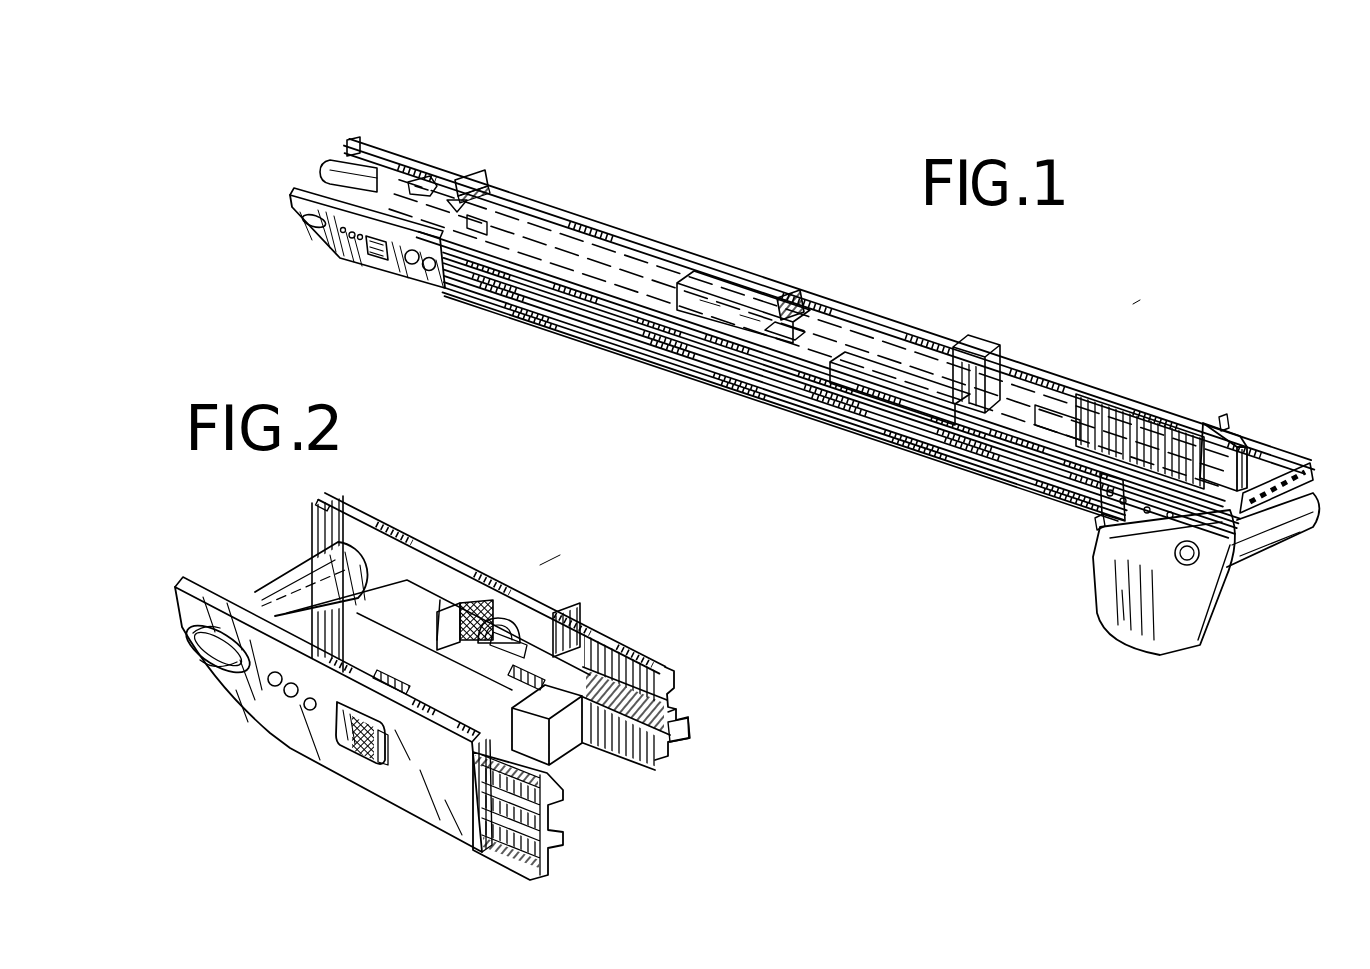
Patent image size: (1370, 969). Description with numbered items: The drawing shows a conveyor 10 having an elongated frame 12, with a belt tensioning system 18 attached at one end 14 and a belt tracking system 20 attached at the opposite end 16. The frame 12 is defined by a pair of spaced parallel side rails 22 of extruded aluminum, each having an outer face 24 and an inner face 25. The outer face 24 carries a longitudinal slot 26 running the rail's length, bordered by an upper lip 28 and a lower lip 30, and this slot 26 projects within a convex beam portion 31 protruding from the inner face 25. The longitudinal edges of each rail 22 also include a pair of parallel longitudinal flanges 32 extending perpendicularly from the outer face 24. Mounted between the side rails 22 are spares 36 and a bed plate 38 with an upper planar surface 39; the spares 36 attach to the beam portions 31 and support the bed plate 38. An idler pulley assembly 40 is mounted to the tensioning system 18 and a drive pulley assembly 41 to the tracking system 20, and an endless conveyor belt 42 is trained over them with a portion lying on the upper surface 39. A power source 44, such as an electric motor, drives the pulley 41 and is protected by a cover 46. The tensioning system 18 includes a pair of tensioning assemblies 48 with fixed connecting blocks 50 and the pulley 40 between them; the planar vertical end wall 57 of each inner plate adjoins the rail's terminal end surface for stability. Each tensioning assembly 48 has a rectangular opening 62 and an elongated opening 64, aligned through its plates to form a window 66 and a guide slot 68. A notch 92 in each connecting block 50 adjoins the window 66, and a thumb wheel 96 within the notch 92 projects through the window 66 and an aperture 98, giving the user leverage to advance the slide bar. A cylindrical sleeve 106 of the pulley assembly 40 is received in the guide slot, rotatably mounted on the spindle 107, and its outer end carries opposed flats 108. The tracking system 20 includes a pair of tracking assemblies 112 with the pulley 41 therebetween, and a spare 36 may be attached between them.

In FIG. 1, the conveyor 10 is at (1132, 304).
In FIG. 1, the elongated frame 12 is at (625, 230).
In FIG. 1, the end of the frame 14 is at (478, 178).
In FIG. 1, the end of the frame 16 is at (1105, 456).
In FIG. 1, the belt tensioning system 18 is at (352, 132).
In FIG. 2, the belt tensioning system 18 is at (550, 562).
In FIG. 1, the belt tracking system 20 is at (1291, 422).
In FIG. 1, the side rails 22 is at (756, 266).
In FIG. 1, the outer face 24 is at (761, 385).
In FIG. 1, the inner face 25 is at (1100, 400).
In FIG. 1, the longitudinal slot 26 is at (575, 316).
In FIG. 1, the upper lip 28 is at (545, 295).
In FIG. 2, the upper lip 28 is at (685, 708).
In FIG. 1, the lower lip 30 is at (630, 330).
In FIG. 2, the lower lip 30 is at (690, 732).
In FIG. 1, the convex beam portion 31 is at (893, 335).
In FIG. 1, the longitudinal flanges 32 is at (1012, 360).
In FIG. 2, the longitudinal flanges 32 is at (655, 660).
In FIG. 1, the spares 36 is at (998, 359).
In FIG. 1, the bed plate 38 is at (800, 312).
In FIG. 1, the upper planar surface 39 is at (790, 340).
In FIG. 1, the idler pulley assembly 40 is at (325, 182).
In FIG. 2, the idler pulley assembly 40 is at (296, 558).
In FIG. 1, the drive pulley assembly 41 is at (1308, 482).
In FIG. 1, the endless conveyor belt 42 is at (740, 300).
In FIG. 1, the power source 44 is at (1268, 558).
In FIG. 1, the cover 46 is at (1120, 607).
In FIG. 2, the tensioning assemblies 48 is at (419, 524).
In FIG. 2, the connecting blocks 50 is at (568, 730).
In FIG. 2, the planar vertical end wall 57 is at (585, 632).
In FIG. 2, the rectangular opening 62 is at (462, 602).
In FIG. 2, the elongated opening 64 is at (192, 650).
In FIG. 2, the window 66 is at (340, 728).
In FIG. 2, the guide slot 68 is at (214, 660).
In FIG. 2, the notch 92 is at (447, 617).
In FIG. 2, the thumb wheel 96 is at (502, 596).
In FIG. 2, the aperture 98 is at (377, 768).
In FIG. 2, the cylindrical sleeve 106 is at (198, 640).
In FIG. 2, the spindle 107 is at (285, 590).
In FIG. 2, the flats 108 is at (259, 635).
In FIG. 1, the tracking assemblies 112 is at (1224, 416).